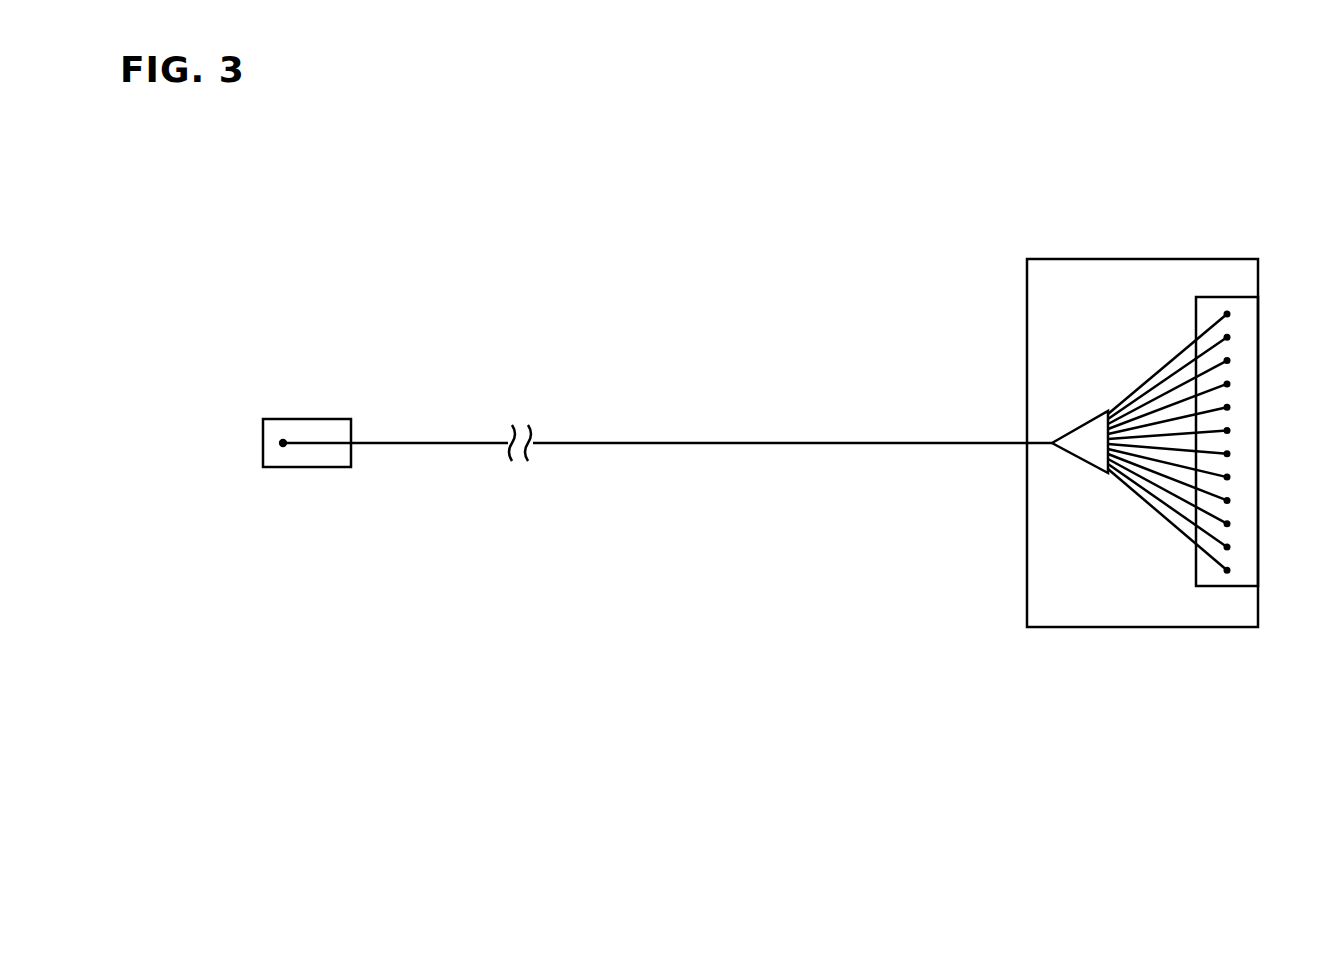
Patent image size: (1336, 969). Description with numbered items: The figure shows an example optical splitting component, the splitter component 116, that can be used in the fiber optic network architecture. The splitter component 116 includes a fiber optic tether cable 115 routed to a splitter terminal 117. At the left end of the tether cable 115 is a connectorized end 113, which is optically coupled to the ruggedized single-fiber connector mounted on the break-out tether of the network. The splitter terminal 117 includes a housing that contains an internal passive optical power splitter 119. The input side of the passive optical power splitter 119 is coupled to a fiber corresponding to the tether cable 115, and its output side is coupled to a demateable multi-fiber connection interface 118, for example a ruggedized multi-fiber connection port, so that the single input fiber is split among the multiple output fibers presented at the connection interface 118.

The connectorized end 113 is at (308, 419).
The fiber optic tether cable 115 is at (760, 443).
The splitter component 116 is at (560, 298).
The splitter terminal 117 is at (1080, 627).
The demateable multi-fiber connection interface 118 is at (1227, 297).
The passive optical power splitter 119 is at (1072, 455).